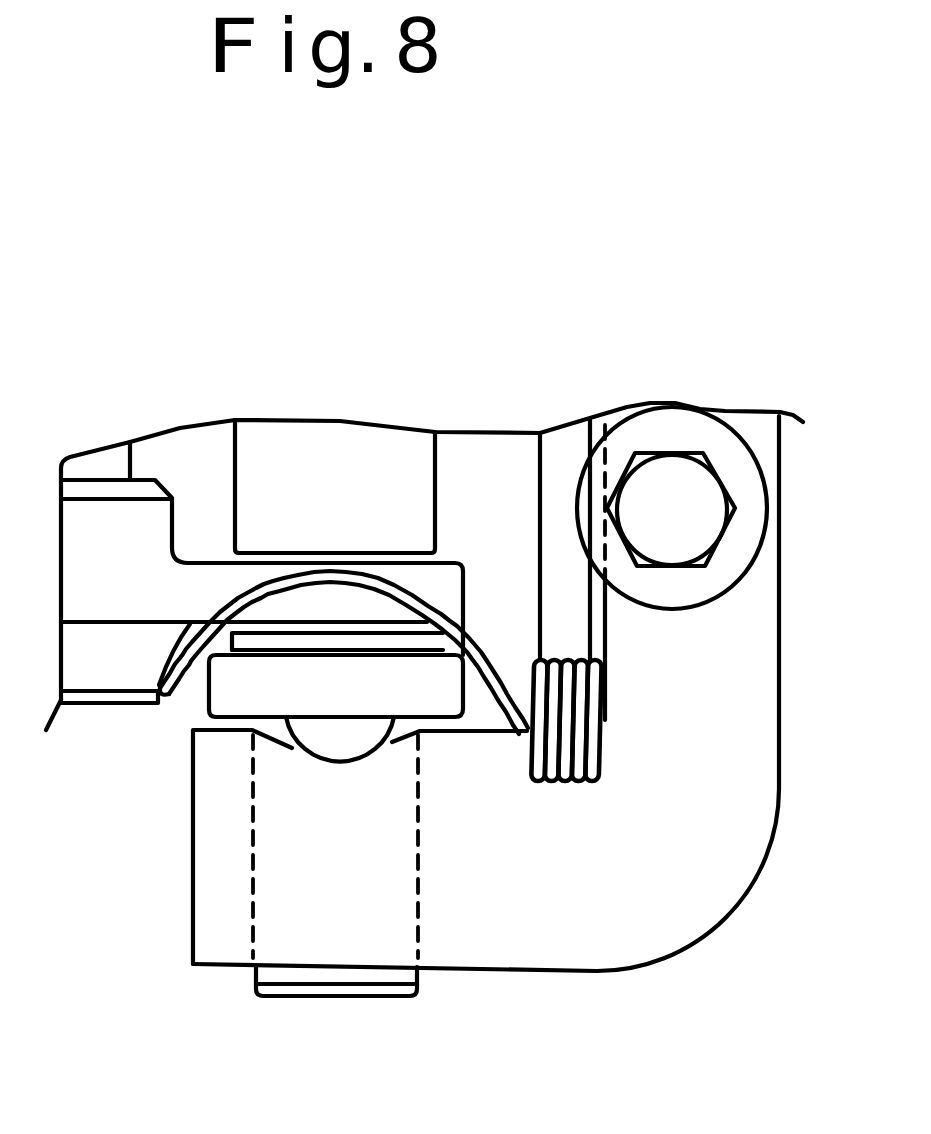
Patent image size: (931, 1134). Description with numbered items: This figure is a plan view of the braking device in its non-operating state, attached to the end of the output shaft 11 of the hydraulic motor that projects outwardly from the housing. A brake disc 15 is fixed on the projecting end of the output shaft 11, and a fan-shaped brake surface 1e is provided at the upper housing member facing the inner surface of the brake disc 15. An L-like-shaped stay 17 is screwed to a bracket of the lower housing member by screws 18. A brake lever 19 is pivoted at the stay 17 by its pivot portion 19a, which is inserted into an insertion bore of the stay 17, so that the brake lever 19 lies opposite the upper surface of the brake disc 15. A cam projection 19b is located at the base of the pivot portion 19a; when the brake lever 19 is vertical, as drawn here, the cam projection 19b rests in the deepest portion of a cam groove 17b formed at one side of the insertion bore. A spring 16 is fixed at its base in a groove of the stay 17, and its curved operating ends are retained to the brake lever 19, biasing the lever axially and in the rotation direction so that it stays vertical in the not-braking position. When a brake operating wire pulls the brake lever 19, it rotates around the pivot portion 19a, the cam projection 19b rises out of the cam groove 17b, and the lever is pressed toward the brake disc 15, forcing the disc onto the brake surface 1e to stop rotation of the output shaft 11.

The output shaft 11 is at (120, 464).
The brake surface 1e is at (356, 521).
The brake disc 15 is at (471, 581).
The spring 16 is at (605, 717).
The stay 17 is at (778, 747).
The cam groove 17b is at (283, 750).
The screws 18 is at (682, 477).
The brake lever 19 is at (305, 678).
The pivot portion 19a is at (388, 998).
The cam projection 19b is at (397, 748).